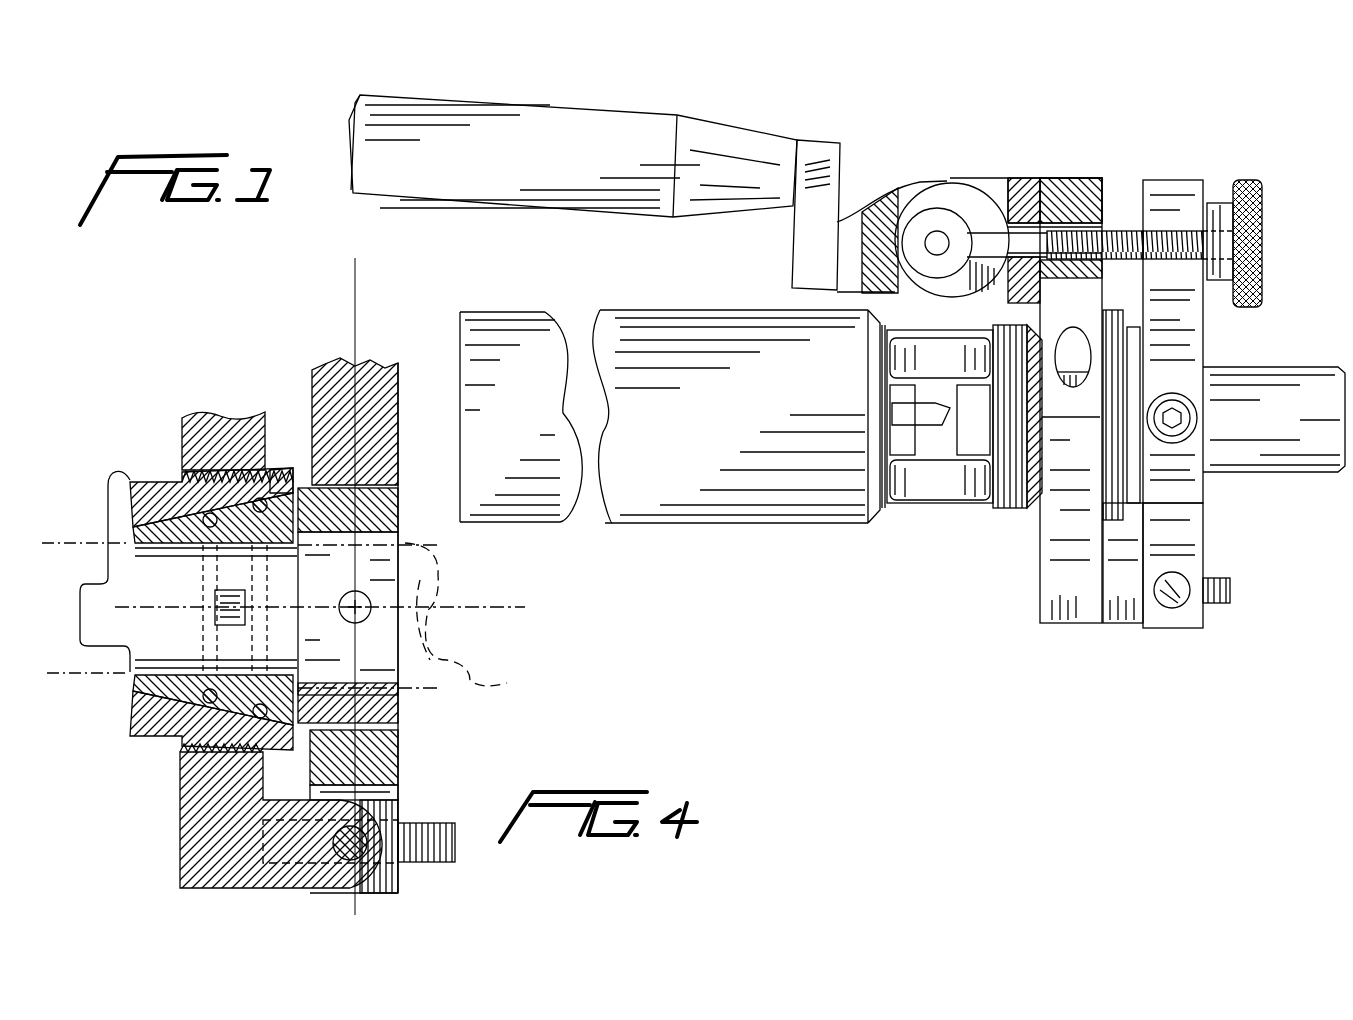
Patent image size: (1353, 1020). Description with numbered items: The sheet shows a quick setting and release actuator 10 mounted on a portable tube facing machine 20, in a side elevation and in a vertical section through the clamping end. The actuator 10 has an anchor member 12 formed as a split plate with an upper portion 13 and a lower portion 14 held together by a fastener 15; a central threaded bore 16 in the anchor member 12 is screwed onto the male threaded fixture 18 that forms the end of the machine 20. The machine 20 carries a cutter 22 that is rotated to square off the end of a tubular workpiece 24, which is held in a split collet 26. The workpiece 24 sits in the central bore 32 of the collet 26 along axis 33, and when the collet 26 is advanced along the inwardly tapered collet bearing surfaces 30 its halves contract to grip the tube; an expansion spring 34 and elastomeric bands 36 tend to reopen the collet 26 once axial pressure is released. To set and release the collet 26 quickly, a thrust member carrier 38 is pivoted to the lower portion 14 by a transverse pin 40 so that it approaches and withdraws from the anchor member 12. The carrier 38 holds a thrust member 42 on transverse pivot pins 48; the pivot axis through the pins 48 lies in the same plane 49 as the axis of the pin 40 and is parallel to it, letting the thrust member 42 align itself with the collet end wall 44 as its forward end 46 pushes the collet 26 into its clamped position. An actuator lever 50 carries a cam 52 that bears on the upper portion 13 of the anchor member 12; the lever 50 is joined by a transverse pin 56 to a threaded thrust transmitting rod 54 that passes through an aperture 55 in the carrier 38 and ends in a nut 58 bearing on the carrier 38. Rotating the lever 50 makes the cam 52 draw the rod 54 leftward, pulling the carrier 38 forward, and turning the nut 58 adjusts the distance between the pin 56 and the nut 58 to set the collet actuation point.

In FIG. 1, the quick setting and release actuator 10 is at (1150, 90).
In FIG. 1, the anchor member 12 is at (1077, 175).
In FIG. 1, the upper portion 13 is at (1123, 227).
In FIG. 4, the upper portion 13 is at (182, 460).
In FIG. 1, the lower portion 14 is at (1035, 600).
In FIG. 4, the lower portion 14 is at (178, 865).
In FIG. 1, the fastener 15 is at (1073, 385).
In FIG. 4, the central threaded bore 16 is at (182, 448).
In FIG. 4, the male threaded fixture 18 is at (86, 572).
In FIG. 1, the portable tube facing machine 20 is at (687, 310).
In FIG. 1, the cutter 22 is at (922, 425).
In FIG. 1, the tubular workpiece 24 is at (1327, 473).
In FIG. 4, the tubular workpiece 24 is at (475, 617).
In FIG. 4, the split collet 26 is at (150, 742).
In FIG. 4, the collet bearing surfaces 30 is at (165, 732).
In FIG. 4, the central bore 32 is at (122, 685).
In FIG. 4, the axis 33 is at (477, 608).
In FIG. 4, the expansion spring 34 is at (215, 598).
In FIG. 4, the elastomeric bands 36 is at (278, 473).
In FIG. 1, the thrust member carrier 38 is at (1213, 183).
In FIG. 4, the thrust member carrier 38 is at (398, 368).
In FIG. 1, the pin 40 is at (1172, 605).
In FIG. 4, the pin 40 is at (452, 860).
In FIG. 4, the thrust member 42 is at (398, 705).
In FIG. 4, the end wall 44 is at (297, 515).
In FIG. 4, the forward end 46 is at (320, 693).
In FIG. 1, the pivot pins 48 is at (1173, 433).
In FIG. 4, the pivot pins 48 is at (368, 600).
In FIG. 4, the plane 49 is at (352, 291).
In FIG. 1, the actuator lever 50 is at (553, 105).
In FIG. 1, the cam 52 is at (972, 202).
In FIG. 1, the threaded thrust transmitting rod 54 is at (1203, 183).
In FIG. 1, the aperture 55 is at (1180, 262).
In FIG. 1, the transverse pin 56 is at (937, 233).
In FIG. 1, the nut 58 is at (1262, 262).